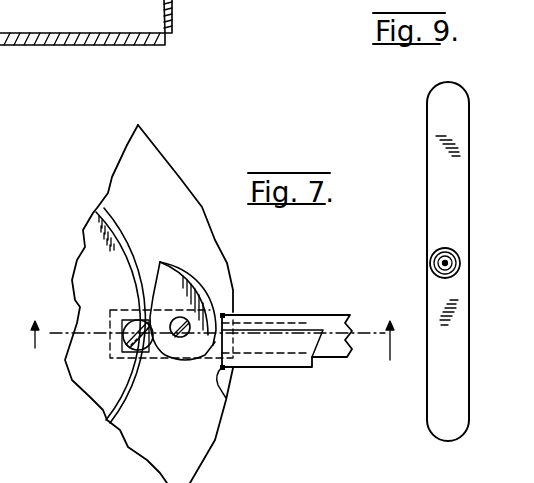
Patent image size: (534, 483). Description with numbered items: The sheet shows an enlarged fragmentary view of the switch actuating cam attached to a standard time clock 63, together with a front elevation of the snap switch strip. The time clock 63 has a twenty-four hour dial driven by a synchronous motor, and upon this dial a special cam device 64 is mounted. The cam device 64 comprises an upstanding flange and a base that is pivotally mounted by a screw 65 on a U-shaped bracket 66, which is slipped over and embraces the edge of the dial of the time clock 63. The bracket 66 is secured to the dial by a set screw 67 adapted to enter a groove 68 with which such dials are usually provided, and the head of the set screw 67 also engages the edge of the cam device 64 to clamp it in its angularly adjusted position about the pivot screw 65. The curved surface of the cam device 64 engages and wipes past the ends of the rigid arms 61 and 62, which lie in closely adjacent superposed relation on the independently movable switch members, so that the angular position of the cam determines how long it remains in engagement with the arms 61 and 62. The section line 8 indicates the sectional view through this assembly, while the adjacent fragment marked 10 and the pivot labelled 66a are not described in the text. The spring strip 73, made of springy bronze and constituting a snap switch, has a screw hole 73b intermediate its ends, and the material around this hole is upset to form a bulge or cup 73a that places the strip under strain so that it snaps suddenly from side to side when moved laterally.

In FIG. 7, the wall fragment 10 is at (173, 24).
In FIG. 7, the time clock 63 is at (176, 183).
In FIG. 7, the groove 68 is at (103, 230).
In FIG. 7, the set screw 67 is at (122, 322).
In FIG. 7, the pivot screw 66a is at (165, 360).
In FIG. 7, the section line 8- 8 is at (209, 340).
In FIG. 7, the cam device 64 is at (200, 274).
In FIG. 7, the screw 65 is at (196, 312).
In FIG. 7, the rigid arm 61 is at (280, 316).
In FIG. 7, the rigid arm 62 is at (294, 368).
In FIG. 7, the U-shaped bracket 66 is at (227, 393).
In FIG. 9, the spring strip 73 is at (457, 153).
In FIG. 9, the bulge or cup 73a is at (460, 258).
In FIG. 9, the screw hole 73b is at (446, 264).